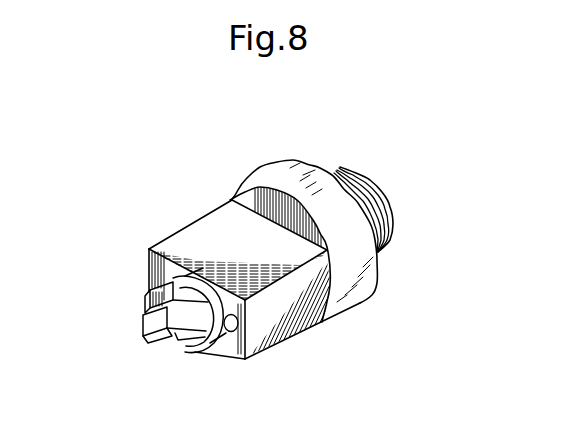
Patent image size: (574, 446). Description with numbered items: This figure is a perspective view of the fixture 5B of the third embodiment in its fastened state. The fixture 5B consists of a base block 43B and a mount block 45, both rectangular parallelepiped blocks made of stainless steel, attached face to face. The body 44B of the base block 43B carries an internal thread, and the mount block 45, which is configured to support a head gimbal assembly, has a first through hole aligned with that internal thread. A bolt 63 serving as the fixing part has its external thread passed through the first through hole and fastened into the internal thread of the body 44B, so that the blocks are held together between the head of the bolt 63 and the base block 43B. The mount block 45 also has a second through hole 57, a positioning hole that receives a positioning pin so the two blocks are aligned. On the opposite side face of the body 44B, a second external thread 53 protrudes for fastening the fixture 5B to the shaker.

The fixture 5B is at (198, 193).
The mount block 45 is at (173, 228).
The base block 43B is at (264, 166).
The body 44B is at (325, 167).
The second external thread 53 is at (382, 197).
The bolt 63 is at (140, 291).
The second through hole 57 is at (228, 331).